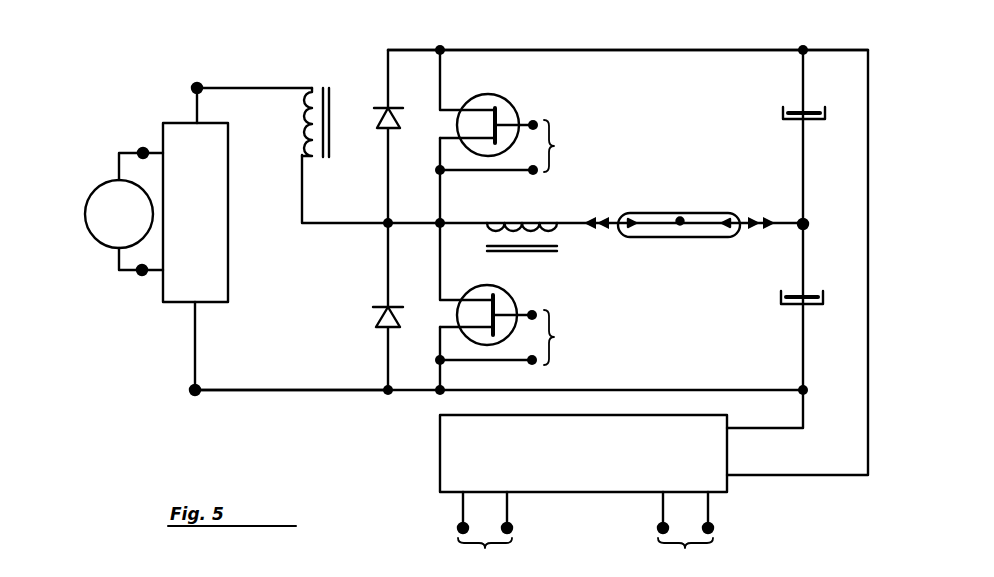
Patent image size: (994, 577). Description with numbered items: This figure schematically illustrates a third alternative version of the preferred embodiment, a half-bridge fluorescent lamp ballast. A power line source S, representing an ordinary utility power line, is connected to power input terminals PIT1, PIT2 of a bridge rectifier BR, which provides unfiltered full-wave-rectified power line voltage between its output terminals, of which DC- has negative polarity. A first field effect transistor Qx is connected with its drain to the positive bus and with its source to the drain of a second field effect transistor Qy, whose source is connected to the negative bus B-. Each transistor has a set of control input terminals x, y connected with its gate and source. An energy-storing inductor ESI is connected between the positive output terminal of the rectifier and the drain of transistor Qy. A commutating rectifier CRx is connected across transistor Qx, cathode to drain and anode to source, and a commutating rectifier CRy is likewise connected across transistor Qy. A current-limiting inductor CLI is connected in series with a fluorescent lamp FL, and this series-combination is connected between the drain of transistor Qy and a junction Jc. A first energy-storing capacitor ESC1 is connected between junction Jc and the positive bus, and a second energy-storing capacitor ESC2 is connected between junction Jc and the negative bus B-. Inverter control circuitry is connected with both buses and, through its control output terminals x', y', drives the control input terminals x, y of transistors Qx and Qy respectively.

The source S is at (126, 226).
The power input terminal PIT1 is at (143, 149).
The power input terminal PIT2 is at (141, 275).
The bridge rectifier BR is at (178, 303).
The DC− terminal DC- is at (193, 392).
The B− bus B- is at (306, 392).
The energy-storing inductor ESI is at (328, 130).
The commutating rectifier CRx is at (398, 116).
The commutating rectifier CRy is at (376, 317).
The first field effect transistor Qx is at (509, 100).
The second field effect transistor Qy is at (512, 298).
The control input terminals x is at (559, 146).
The control input terminals y is at (558, 337).
The current-limiting inductor CLI is at (558, 250).
The fluorescent lamp FL is at (688, 212).
The junction Jc is at (806, 222).
The first energy-storing capacitor ESC1 is at (790, 121).
The second energy-storing capacitor ESC2 is at (787, 307).
The control output terminal x' is at (485, 532).
The control output terminal y' is at (685, 534).